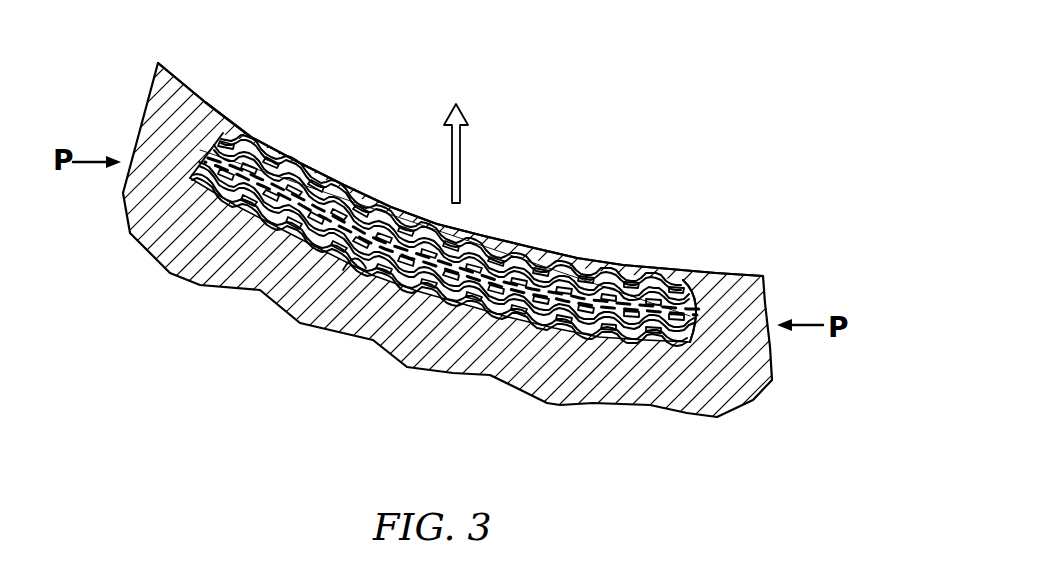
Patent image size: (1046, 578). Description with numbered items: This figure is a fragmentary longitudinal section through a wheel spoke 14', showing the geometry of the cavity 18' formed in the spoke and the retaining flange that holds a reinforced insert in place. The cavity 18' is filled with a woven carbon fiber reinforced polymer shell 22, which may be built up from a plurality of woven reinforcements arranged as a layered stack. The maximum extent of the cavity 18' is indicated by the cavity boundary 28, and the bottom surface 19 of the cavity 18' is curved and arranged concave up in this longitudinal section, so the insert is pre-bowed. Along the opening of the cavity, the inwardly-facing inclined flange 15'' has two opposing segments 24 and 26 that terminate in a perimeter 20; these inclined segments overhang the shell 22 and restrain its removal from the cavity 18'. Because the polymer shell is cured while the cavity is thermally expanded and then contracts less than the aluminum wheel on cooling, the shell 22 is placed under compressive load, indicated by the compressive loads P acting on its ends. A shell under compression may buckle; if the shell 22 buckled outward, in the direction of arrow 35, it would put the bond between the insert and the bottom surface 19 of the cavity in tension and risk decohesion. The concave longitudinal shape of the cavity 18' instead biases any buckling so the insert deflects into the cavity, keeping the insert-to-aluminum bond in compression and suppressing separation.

The spoke 14' is at (523, 289).
The inwardly-facing inclined flange 15'' is at (461, 149).
The cavity 18' is at (440, 271).
The bottom surface of cavity 19 is at (365, 270).
The perimeter 20 is at (235, 131).
The woven carbon fiber reinforced polymer shell 22 is at (412, 286).
The flange segment 24 is at (230, 132).
The flange segment 26 is at (698, 303).
The cavity boundary 28 is at (203, 160).
The arrow 35 is at (493, 173).